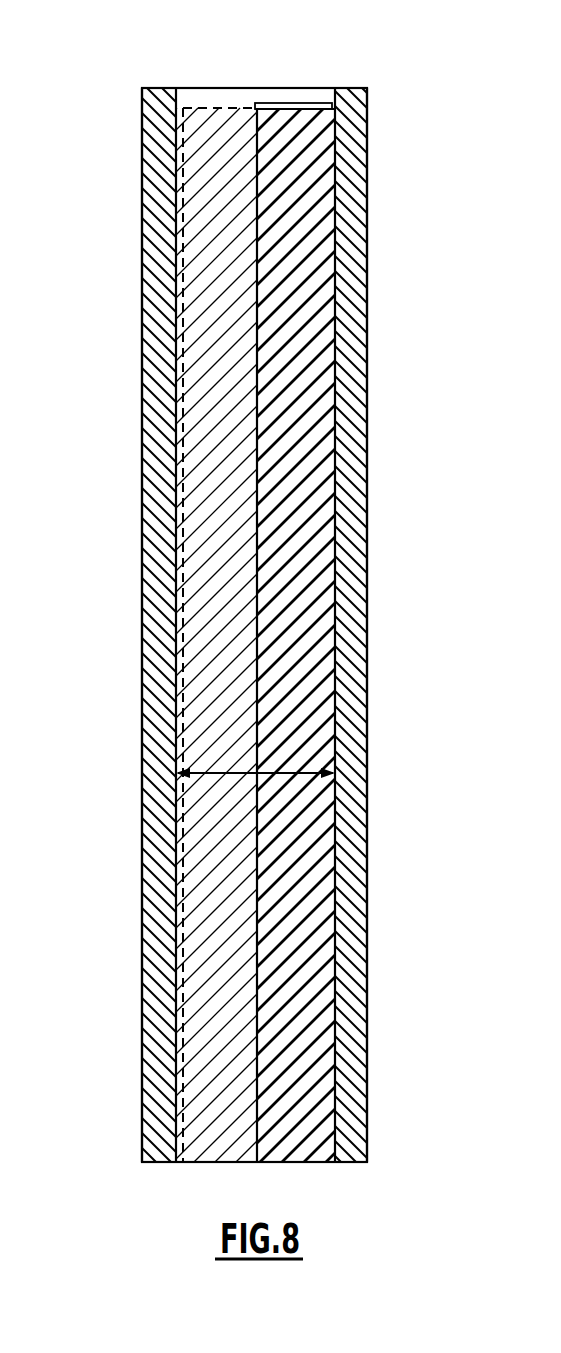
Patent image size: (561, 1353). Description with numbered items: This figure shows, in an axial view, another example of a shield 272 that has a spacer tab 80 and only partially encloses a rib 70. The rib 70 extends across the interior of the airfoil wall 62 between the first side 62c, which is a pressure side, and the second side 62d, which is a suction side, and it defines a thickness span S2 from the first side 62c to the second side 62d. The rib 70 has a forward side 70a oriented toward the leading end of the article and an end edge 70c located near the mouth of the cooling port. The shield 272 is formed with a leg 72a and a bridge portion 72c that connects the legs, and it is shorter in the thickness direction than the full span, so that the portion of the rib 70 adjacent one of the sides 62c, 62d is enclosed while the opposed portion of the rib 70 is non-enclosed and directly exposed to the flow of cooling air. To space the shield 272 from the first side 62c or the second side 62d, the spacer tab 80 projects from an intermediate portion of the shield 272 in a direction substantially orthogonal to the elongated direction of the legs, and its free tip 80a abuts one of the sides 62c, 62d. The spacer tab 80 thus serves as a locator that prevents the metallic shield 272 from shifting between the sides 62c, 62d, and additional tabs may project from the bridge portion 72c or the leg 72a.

The airfoil wall 62 is at (140, 867).
The first side 62c is at (368, 543).
The second side 62d is at (142, 609).
The rib 70 is at (313, 162).
The forward side 70a is at (300, 240).
The end edge 70c is at (297, 95).
The first leg 72a is at (205, 1022).
The bridge portion 72c is at (243, 88).
The spacer tab 80 is at (318, 100).
The free tip 80a is at (337, 105).
The shield 272 is at (212, 78).
The thickness span S2 is at (308, 772).